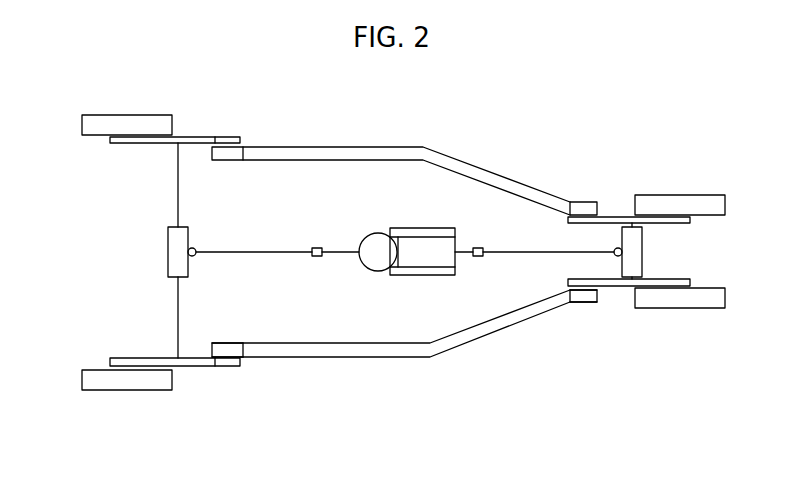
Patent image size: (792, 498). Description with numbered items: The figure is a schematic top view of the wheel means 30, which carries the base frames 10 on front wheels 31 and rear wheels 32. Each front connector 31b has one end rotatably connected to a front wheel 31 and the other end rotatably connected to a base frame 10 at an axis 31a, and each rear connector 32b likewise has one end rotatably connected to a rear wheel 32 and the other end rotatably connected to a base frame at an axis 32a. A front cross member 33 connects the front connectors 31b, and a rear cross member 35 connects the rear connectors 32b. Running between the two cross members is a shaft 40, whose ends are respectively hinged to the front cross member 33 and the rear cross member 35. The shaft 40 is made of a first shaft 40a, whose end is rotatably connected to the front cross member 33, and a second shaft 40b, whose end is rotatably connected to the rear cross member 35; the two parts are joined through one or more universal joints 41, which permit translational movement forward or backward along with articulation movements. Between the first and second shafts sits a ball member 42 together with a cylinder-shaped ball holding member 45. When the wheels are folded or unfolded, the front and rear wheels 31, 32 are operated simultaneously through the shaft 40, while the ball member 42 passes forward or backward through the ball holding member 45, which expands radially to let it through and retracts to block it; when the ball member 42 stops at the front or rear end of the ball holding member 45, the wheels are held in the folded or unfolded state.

The base frame 10 is at (415, 362).
The wheel means 30 is at (508, 83).
The front wheel 31 is at (683, 303).
The axis 31a is at (580, 217).
The front connector 31b is at (688, 284).
The rear wheel 32 is at (118, 383).
The axis 32a is at (227, 362).
The rear connector 32b is at (115, 143).
The front cross member 33 is at (635, 237).
The rear cross member 35 is at (170, 258).
The shaft 40 is at (288, 202).
The first shaft 40a is at (535, 255).
The second shaft 40b is at (273, 262).
The universal joint 41 is at (477, 248).
The ball member 42 is at (370, 255).
The ball holding member 45 is at (427, 272).